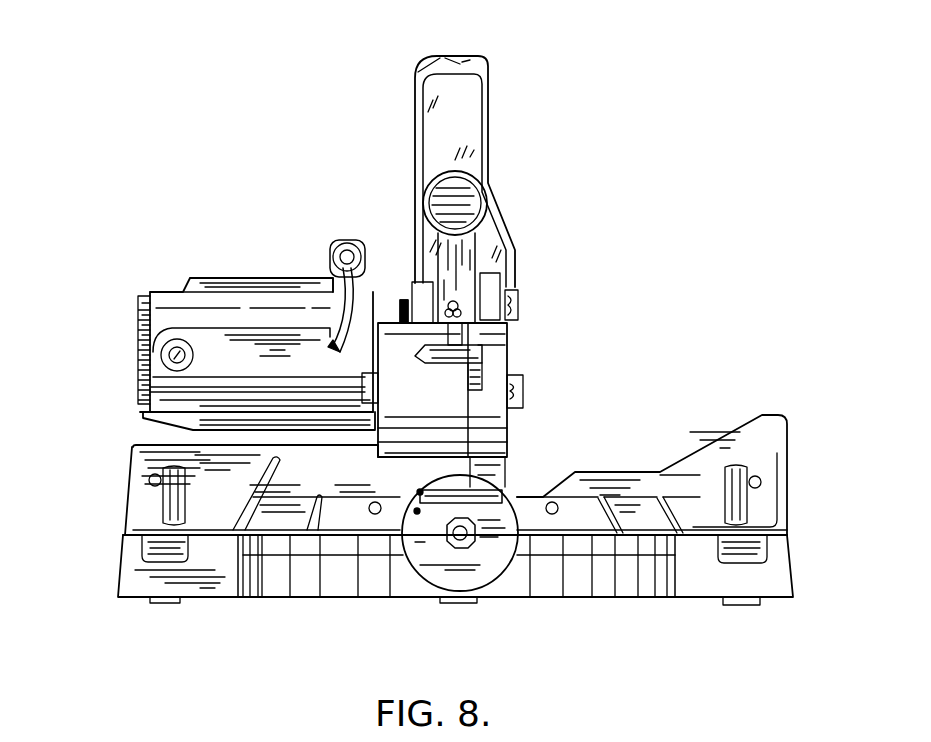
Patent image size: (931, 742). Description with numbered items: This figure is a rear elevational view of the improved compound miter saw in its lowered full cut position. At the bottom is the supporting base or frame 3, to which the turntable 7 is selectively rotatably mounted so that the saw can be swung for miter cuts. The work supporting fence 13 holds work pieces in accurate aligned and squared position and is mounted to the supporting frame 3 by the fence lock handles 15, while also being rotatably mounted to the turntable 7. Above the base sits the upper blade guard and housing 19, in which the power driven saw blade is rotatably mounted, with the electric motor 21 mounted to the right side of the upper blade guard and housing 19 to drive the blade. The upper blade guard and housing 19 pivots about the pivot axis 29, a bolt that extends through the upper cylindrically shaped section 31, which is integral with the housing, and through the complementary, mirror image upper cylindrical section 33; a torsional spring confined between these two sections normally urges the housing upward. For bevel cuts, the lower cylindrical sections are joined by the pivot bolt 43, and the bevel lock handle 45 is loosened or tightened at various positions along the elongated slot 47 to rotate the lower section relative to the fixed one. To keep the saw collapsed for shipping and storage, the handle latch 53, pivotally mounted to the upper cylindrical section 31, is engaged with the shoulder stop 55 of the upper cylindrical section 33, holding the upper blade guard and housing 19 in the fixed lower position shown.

The supporting base or frame 3 is at (228, 584).
The turntable 7 is at (632, 543).
The work supporting fence 13 is at (622, 466).
The fence lock handles 15 is at (180, 497).
The upper blade guard and housing 19 is at (458, 141).
The electric motor 21 is at (260, 308).
The pivot axis 29 is at (523, 390).
The upper cylindrically shaped section 31 is at (493, 373).
The upper cylindrical section 33 is at (400, 352).
The pivot bolt 43 is at (465, 543).
The bevel lock handle 45 is at (500, 592).
The elongated slot 47 is at (418, 515).
The handle latch 53 is at (462, 357).
The shoulder stop 55 is at (458, 330).